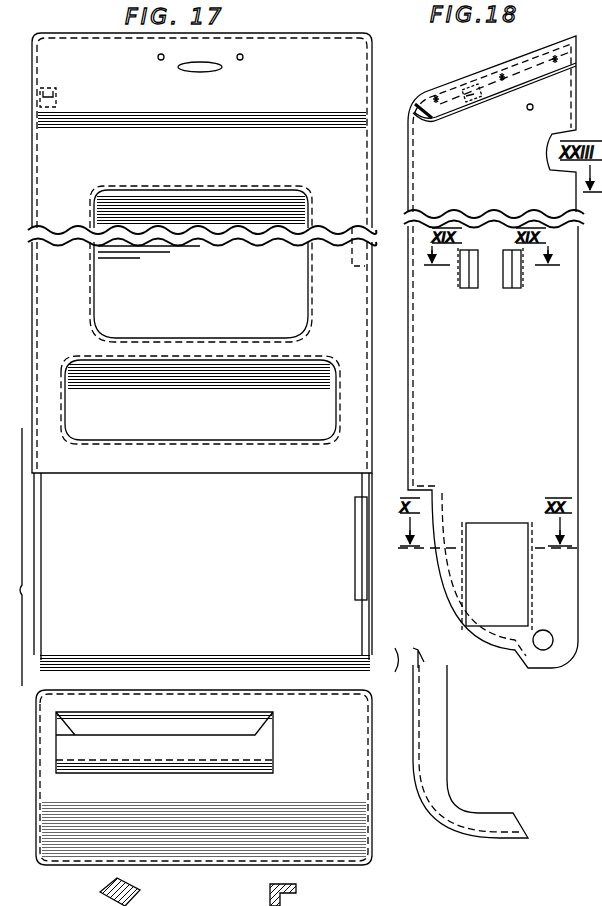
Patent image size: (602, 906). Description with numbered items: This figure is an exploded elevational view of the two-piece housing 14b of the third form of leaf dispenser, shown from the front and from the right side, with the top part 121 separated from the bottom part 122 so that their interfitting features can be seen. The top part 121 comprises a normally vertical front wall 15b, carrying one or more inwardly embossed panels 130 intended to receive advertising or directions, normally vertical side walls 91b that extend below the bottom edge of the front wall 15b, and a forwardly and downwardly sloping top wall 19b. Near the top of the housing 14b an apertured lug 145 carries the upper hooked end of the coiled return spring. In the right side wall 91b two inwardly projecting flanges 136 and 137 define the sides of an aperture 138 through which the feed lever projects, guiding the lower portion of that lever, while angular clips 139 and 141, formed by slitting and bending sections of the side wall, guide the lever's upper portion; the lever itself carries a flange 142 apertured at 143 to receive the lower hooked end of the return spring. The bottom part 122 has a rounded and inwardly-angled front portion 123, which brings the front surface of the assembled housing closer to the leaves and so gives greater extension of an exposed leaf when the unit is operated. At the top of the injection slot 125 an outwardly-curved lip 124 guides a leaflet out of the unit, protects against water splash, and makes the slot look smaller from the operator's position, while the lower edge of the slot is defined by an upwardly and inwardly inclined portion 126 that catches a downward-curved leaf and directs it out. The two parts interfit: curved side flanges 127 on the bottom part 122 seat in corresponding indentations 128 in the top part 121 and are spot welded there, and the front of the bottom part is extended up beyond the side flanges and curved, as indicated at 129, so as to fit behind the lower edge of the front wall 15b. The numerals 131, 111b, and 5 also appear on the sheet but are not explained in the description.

In FIG. 17, the top wall 19b is at (316, 46).
In FIG. 18, the top wall 19b is at (527, 50).
In FIG. 17, the apertured lug 145 is at (57, 98).
In FIG. 18, the apertured lug 145 is at (472, 104).
In FIG. 18, the housing 14b is at (440, 84).
In FIG. 17, the top part 121 is at (375, 195).
In FIG. 18, the top part 121 is at (406, 347).
In FIG. 17, the angular clip 139 is at (352, 266).
In FIG. 18, the angular clip 139 is at (476, 304).
In FIG. 18, the angular clip 141 is at (516, 290).
In FIG. 17, the panel 130 is at (86, 392).
In FIG. 17, the lower pocket 131 is at (232, 478).
In FIG. 17, the side wall 91b is at (368, 616).
In FIG. 18, the side wall 91b is at (493, 447).
In FIG. 17, the front wall 15b is at (100, 478).
In FIG. 18, the front wall 15b is at (416, 488).
In FIG. 17, the flange 136 is at (358, 546).
In FIG. 18, the flange 136 is at (466, 576).
In FIG. 18, the flange 137 is at (528, 592).
In FIG. 18, the aperture 138 is at (513, 512).
In FIG. 17, the outwardly-curved lip 124 is at (188, 722).
In FIG. 18, the outwardly-curved lip 124 is at (415, 650).
In FIG. 17, the injection slot 125 is at (255, 748).
In FIG. 17, the front portion 123 is at (316, 759).
In FIG. 17, the inclined portion 126 is at (178, 762).
In FIG. 18, the inclined portion 126 is at (436, 740).
In FIG. 18, the side flange 127 is at (432, 718).
In FIG. 18, the indentation 128 is at (500, 670).
In FIG. 18, the curved extension 129 is at (440, 672).
In FIG. 17, the bottom part 122 is at (375, 868).
In FIG. 18, the bottom part 122 is at (460, 798).
In FIG. 17, the flange 142 is at (98, 895).
In FIG. 17, the aperture 143 is at (143, 893).
In FIG. 18, the member 111b is at (589, 754).
In FIG. 18, the housing 5 is at (598, 802).